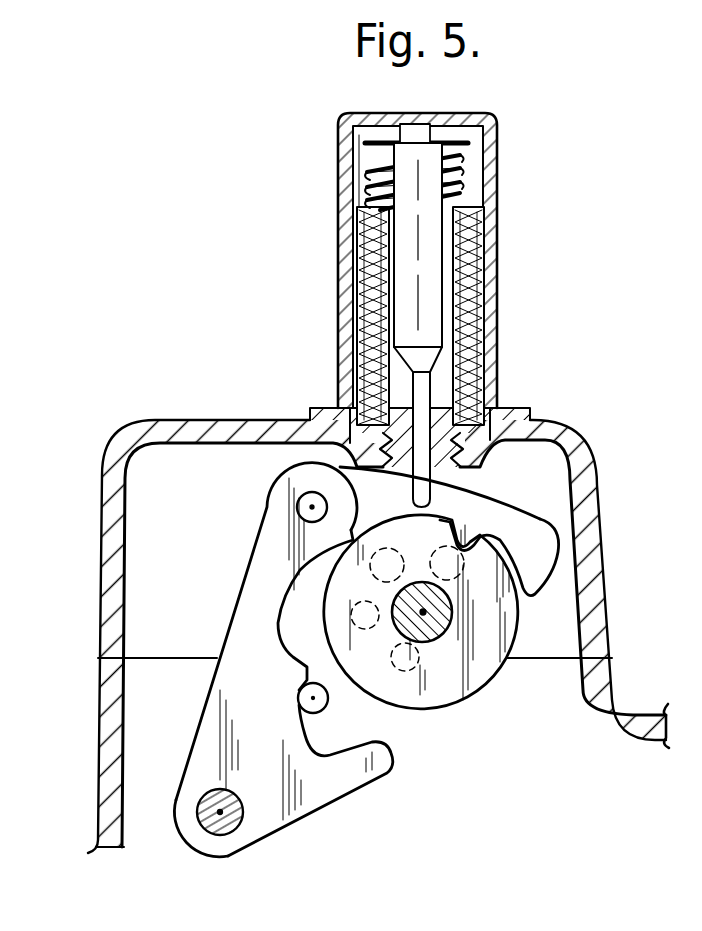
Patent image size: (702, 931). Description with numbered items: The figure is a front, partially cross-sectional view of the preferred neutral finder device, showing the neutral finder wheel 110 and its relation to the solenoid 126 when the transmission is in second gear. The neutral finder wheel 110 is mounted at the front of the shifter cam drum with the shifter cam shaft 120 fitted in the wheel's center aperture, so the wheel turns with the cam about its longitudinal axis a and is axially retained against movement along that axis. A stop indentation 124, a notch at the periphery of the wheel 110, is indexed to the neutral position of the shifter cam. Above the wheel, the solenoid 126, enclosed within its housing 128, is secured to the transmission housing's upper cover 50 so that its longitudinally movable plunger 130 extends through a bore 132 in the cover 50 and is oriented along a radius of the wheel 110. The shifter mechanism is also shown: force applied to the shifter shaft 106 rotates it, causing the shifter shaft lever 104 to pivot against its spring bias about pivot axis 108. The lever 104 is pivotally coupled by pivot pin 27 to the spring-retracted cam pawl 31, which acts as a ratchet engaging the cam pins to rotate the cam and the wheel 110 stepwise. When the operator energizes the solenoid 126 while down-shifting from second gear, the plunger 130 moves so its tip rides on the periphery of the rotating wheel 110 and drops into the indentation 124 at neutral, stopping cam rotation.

The housing 128 is at (499, 192).
The solenoid 126 is at (502, 267).
The bore 132 is at (420, 392).
The solenoid plunger 130 is at (463, 405).
The pivot pin 27 is at (300, 500).
The stop indentation 124 is at (463, 538).
The cam pawl 31 is at (536, 519).
The upper cover 50 is at (610, 608).
The shifter shaft lever 104 is at (228, 603).
The longitudinal axis a is at (423, 612).
The shifter cam shaft 120 is at (432, 626).
The neutral finder wheel 110 is at (432, 716).
The pivot axis 108 is at (224, 812).
The shifter shaft 106 is at (203, 828).